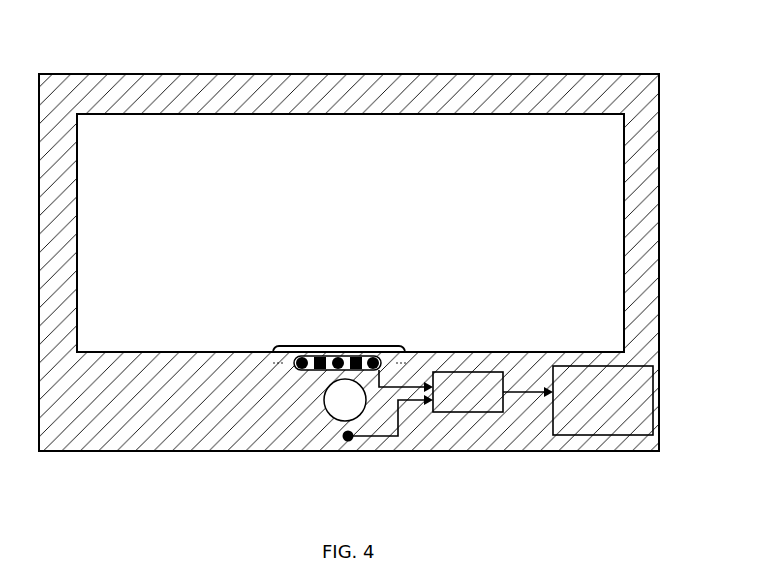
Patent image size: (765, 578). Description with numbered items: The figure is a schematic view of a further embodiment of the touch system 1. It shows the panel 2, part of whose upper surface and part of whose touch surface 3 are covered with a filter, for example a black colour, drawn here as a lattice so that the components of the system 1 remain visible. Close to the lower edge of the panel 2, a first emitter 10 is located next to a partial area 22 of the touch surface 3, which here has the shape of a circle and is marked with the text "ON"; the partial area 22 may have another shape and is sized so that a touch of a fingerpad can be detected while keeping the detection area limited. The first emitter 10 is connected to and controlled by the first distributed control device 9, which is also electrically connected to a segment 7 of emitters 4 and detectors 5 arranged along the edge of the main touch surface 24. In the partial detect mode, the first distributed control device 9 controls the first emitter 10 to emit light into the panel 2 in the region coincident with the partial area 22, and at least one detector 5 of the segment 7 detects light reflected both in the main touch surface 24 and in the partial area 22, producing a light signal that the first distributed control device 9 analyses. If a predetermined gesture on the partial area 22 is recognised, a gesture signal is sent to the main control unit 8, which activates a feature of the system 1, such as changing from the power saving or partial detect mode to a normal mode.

The touch system 1 is at (120, 463).
The panel 2 is at (221, 95).
The touch surface 3 is at (315, 137).
The emitters 4 is at (302, 357).
The detectors 5 is at (320, 357).
The segment 7 is at (402, 350).
The main control unit 8 is at (603, 400).
The first distributed control device 9 is at (468, 392).
The first emitter 10 is at (350, 441).
The partial area 22 is at (342, 414).
The main touch surface 24 is at (145, 163).